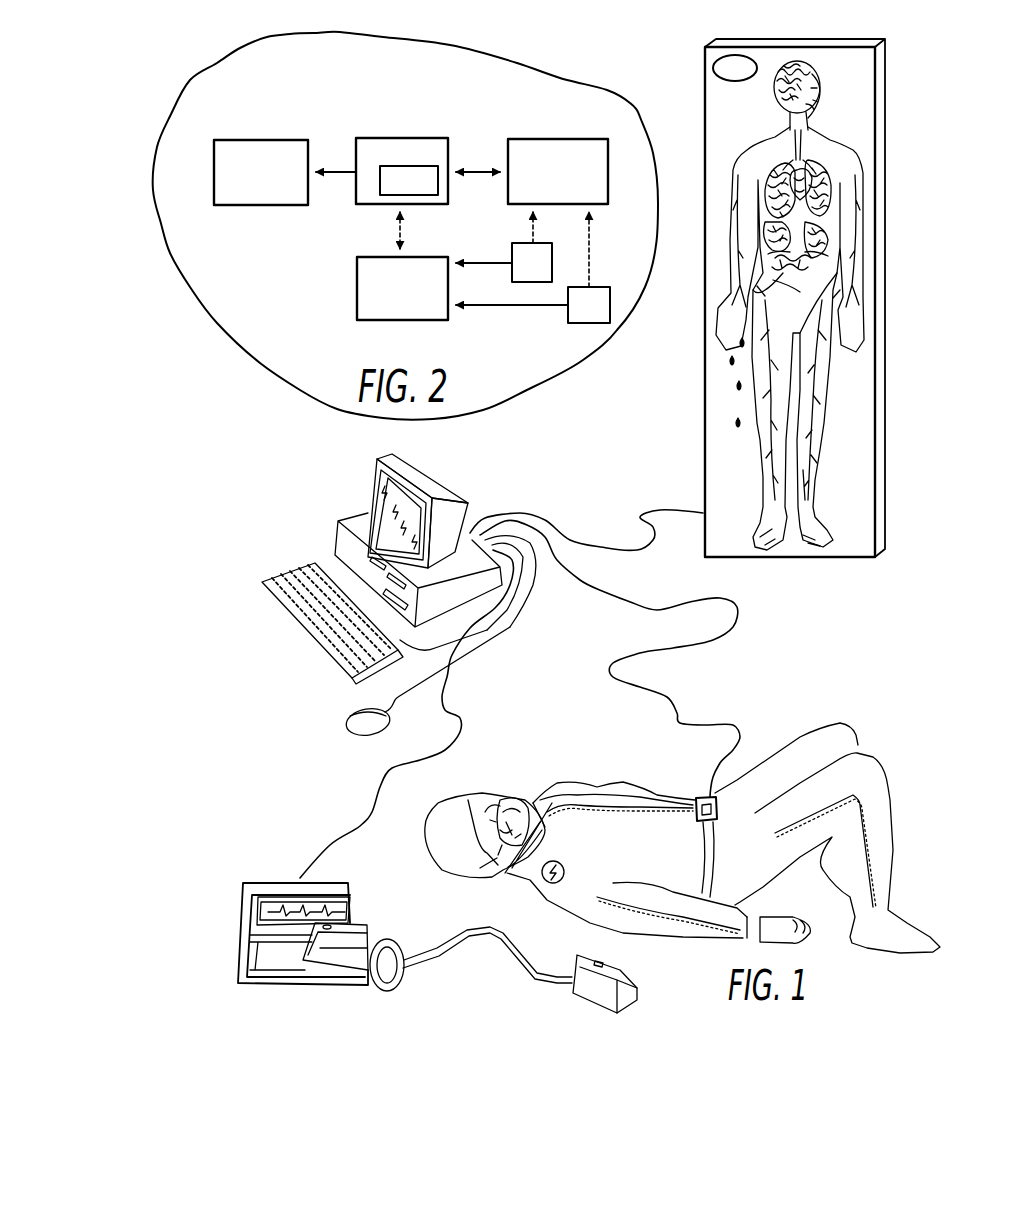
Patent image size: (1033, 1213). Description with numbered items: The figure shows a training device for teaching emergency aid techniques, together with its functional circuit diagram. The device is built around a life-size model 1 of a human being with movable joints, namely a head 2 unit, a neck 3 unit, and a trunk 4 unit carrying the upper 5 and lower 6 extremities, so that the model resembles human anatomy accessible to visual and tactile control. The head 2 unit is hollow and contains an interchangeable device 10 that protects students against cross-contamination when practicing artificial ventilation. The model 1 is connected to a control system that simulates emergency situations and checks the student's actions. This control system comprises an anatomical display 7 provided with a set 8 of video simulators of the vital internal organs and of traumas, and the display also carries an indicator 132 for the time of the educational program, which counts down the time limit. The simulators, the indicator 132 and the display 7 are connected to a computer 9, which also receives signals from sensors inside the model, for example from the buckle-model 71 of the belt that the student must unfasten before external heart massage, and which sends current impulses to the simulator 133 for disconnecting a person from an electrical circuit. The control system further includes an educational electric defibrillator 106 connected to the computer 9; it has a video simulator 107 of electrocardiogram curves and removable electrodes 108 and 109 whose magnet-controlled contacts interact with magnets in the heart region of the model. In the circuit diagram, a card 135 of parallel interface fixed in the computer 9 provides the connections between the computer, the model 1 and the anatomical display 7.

In FIG. 2, the model of a human being 1 is at (558, 171).
In FIG. 1, the model of a human being 1 is at (671, 836).
In FIG. 1, the head unit 2 is at (440, 842).
In FIG. 1, the neck unit 3 is at (500, 875).
In FIG. 1, the trunk unit 4 is at (530, 870).
In FIG. 1, the upper extremities 5 is at (683, 930).
In FIG. 1, the lower extremities 6 is at (778, 760).
In FIG. 2, the anatomical display 7 is at (261, 172).
In FIG. 1, the anatomical display 7 is at (777, 298).
In FIG. 1, the set of video simulators 8 is at (820, 193).
In FIG. 2, the computer 9 is at (402, 171).
In FIG. 1, the computer 9 is at (343, 533).
In FIG. 1, the interchangeable device 10 is at (500, 793).
In FIG. 1, the buckle-model of the belt 71 is at (697, 798).
In FIG. 2, the educational electric defibrillator 106 is at (402, 288).
In FIG. 1, the educational electric defibrillator 106 is at (431, 920).
In FIG. 1, the video simulator of curve electrocardiograms 107 is at (340, 910).
In FIG. 2, the removable electrode 108 is at (532, 263).
In FIG. 1, the removable electrode 108 is at (367, 927).
In FIG. 2, the removable electrode 109 is at (589, 306).
In FIG. 1, the removable electrode 109 is at (573, 997).
In FIG. 1, the indicator for the time of an emergency aid educational program 132 is at (713, 68).
In FIG. 1, the simulator for disconnecting a person from the circuit 133 is at (552, 883).
In FIG. 2, the card of parallel interface 135 is at (409, 181).